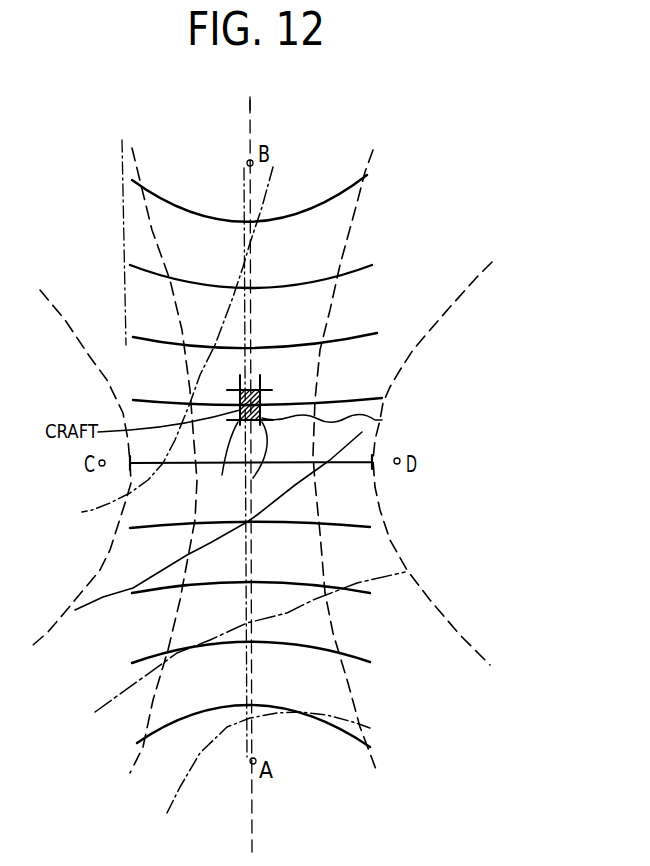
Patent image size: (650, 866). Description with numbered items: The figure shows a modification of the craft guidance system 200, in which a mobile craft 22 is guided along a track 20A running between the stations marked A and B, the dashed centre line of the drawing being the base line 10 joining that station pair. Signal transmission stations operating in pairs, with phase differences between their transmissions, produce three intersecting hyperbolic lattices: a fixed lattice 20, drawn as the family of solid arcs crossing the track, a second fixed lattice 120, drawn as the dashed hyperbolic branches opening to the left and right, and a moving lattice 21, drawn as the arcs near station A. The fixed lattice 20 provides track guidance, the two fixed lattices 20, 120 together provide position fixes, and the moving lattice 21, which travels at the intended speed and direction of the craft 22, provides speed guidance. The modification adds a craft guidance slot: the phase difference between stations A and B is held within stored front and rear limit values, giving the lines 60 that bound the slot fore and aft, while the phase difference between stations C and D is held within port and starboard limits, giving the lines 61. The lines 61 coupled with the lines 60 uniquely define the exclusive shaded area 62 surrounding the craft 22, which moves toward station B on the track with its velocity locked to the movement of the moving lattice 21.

The base line 10 is at (240, 185).
The fixed hyperbolic lattice 20 is at (357, 207).
The track 20A is at (256, 104).
The moving hyperbolic lattice 21 is at (338, 725).
The mobile craft 22 is at (262, 396).
The slot front and rear limit lines 60 is at (227, 389).
The slot port and starboard limit lines 61 is at (253, 478).
The craft guidance slot area 62 is at (382, 420).
The fixed hyperbolic lattice 120 is at (105, 566).
The craft guidance system 200 is at (460, 423).